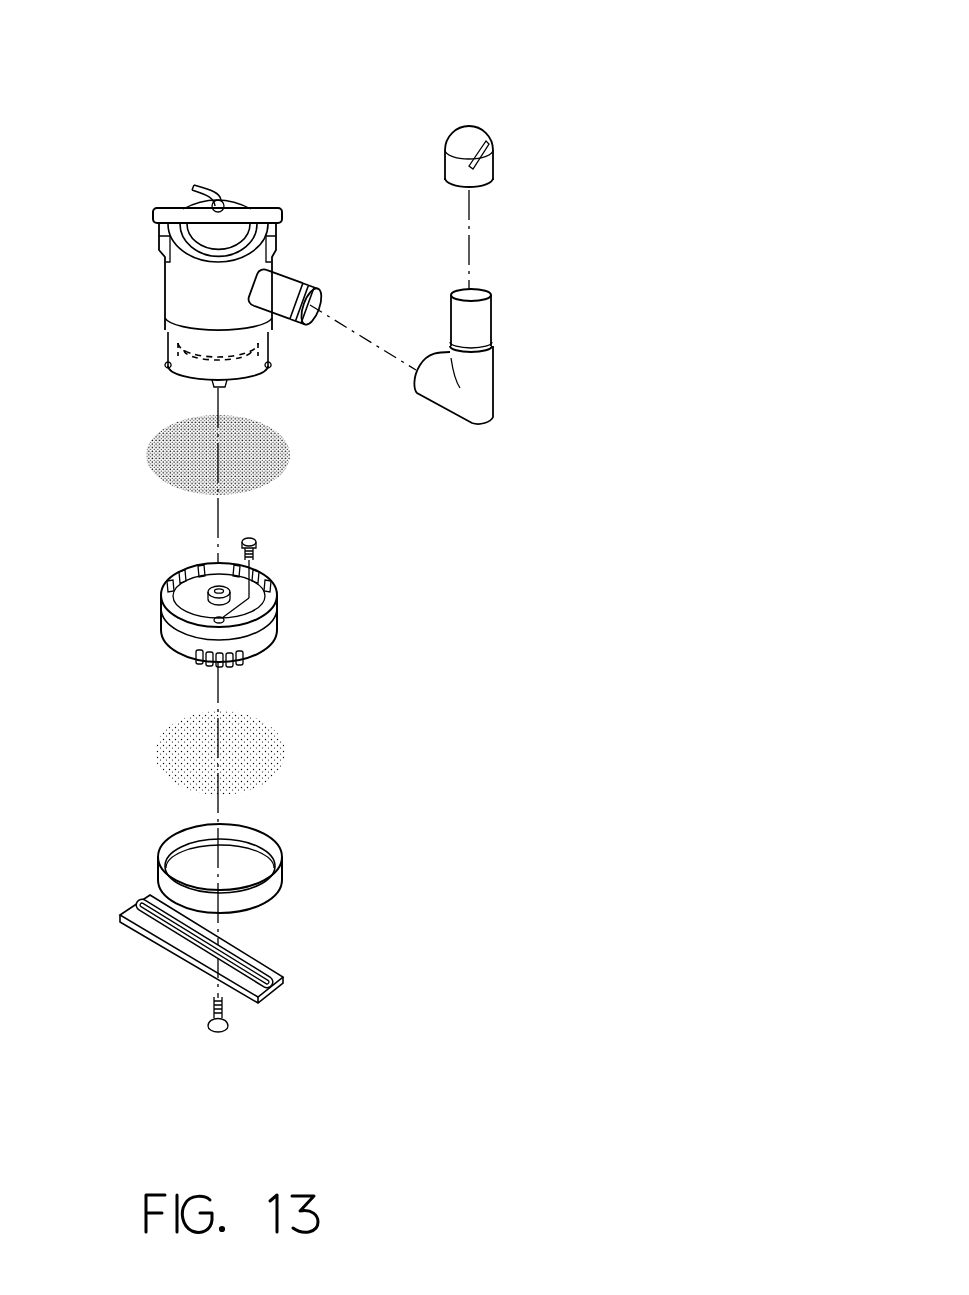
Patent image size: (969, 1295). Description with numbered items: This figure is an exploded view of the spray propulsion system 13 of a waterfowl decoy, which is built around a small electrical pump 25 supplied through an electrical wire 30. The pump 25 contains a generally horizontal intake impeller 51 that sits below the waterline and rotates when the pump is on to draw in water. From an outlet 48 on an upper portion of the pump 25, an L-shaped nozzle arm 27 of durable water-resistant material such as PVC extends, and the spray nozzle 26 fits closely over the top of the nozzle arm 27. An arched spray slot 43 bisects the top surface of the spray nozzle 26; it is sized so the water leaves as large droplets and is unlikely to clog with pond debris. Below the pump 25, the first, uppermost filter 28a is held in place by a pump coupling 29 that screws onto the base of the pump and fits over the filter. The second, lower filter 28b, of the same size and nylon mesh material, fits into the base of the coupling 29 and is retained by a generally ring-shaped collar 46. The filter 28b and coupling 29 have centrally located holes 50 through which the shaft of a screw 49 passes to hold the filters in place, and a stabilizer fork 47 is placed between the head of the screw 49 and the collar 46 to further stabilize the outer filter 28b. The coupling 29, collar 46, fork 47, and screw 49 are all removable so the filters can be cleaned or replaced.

The spray propulsion system 13 is at (568, 78).
The pump 25 is at (174, 283).
The spray nozzle 26 is at (471, 130).
The nozzle arm 27 is at (495, 383).
The first, uppermost filter 28a is at (150, 436).
The second, lower filter 28b is at (156, 725).
The pump coupling 29 is at (166, 580).
The electrical wire 30 is at (200, 181).
The arched spray slot 43 is at (487, 141).
The collar 46 is at (160, 848).
The stabilizer fork 47 is at (166, 942).
The outlet 48 is at (292, 276).
The screw 49 is at (207, 1031).
The centrally located holes 50 is at (220, 752).
The intake impeller 51 is at (170, 358).